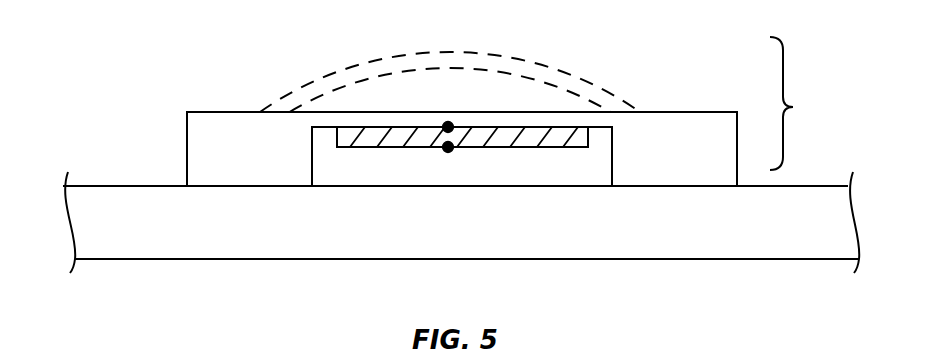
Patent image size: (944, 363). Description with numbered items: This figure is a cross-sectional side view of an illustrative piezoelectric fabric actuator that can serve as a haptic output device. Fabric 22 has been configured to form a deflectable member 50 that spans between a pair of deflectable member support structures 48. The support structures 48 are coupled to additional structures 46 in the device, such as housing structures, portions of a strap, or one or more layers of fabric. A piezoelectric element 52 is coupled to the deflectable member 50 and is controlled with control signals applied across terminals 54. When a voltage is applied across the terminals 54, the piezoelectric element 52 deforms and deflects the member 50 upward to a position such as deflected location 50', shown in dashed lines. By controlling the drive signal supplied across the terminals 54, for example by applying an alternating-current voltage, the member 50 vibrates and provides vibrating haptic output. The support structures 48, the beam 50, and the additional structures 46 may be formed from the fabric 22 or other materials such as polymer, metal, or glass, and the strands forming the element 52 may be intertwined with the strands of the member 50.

The fabric 22 is at (795, 103).
The additional structures 46 is at (178, 240).
The deflectable member support structures 48 is at (202, 145).
The deflectable member 50 is at (450, 74).
The deflected location 50' is at (450, 58).
The piezoelectric element 52 is at (521, 140).
The terminals 54 is at (448, 128).